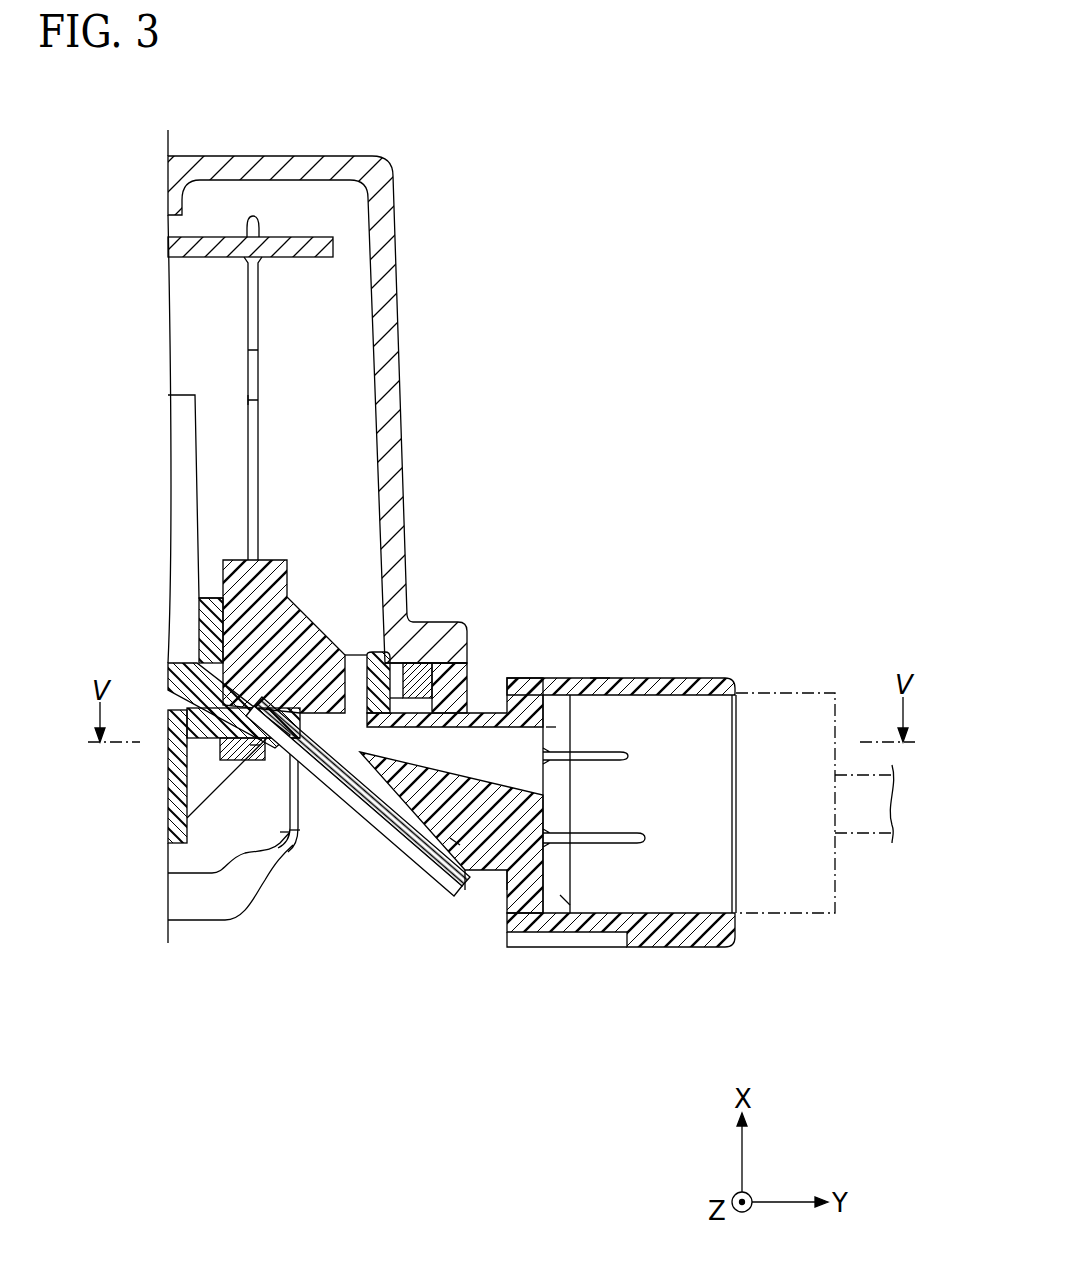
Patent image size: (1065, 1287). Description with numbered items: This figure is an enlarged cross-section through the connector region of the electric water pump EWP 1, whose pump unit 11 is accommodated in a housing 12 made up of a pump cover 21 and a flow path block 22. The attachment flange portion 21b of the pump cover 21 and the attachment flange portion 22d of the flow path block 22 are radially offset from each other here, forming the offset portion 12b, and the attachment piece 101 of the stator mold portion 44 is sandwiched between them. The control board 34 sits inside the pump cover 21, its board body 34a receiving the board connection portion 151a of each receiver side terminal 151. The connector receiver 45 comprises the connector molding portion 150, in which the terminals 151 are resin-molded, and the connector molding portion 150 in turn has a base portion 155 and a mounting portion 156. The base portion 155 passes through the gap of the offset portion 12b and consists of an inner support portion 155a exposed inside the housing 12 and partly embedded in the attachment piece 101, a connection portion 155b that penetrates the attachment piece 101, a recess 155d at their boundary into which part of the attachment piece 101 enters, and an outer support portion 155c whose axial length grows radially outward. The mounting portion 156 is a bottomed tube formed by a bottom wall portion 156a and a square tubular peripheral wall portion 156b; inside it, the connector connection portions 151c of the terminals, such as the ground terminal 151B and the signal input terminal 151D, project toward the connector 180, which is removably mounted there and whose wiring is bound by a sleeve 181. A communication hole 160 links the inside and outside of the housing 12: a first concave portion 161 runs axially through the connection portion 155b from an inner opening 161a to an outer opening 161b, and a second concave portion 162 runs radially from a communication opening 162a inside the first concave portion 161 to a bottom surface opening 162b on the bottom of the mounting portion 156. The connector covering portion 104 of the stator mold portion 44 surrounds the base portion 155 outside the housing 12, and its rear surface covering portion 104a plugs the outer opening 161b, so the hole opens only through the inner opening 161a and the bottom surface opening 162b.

The EWP 1 is at (434, 191).
The pump unit 11 is at (338, 325).
The housing 12 is at (326, 537).
The offset portion 12b is at (294, 832).
The pump cover 21 is at (203, 167).
The attachment flange portion 21b is at (462, 648).
The flow path block 22 is at (205, 852).
The attachment flange portion 22d is at (225, 762).
The control board 34 is at (313, 237).
The board body 34a is at (168, 247).
The stator mold portion 44 is at (170, 785).
The connector receiver 45 is at (670, 673).
The attachment piece 101 is at (462, 700).
The connector covering portion 104 is at (461, 981).
The rear surface covering portion 104a is at (468, 892).
The connector molding portion 150 is at (720, 673).
The receiver side terminal 151 is at (484, 684).
The board connection portion 151a is at (247, 400).
The ground terminal 151B is at (648, 840).
The connector connection portion 151c is at (550, 720).
The signal input terminal 151D is at (630, 757).
The base portion 155 is at (220, 561).
The inner support portion 155a is at (183, 663).
The connection portion 155b is at (283, 832).
The outer support portion 155c is at (455, 842).
The recess 155d is at (255, 747).
The mounting portion 156 is at (700, 936).
The bottom wall portion 156a is at (546, 935).
The peripheral wall portion 156b is at (598, 678).
The communication hole 160 is at (423, 683).
The first concave portion 161 is at (240, 640).
The inner opening 161a is at (358, 658).
The outer opening 161b is at (318, 762).
The second concave portion 162 is at (420, 872).
The communication opening 162a is at (385, 662).
The bottom surface opening 162b is at (566, 902).
The connector 180 is at (837, 915).
The sleeve 181 is at (866, 834).